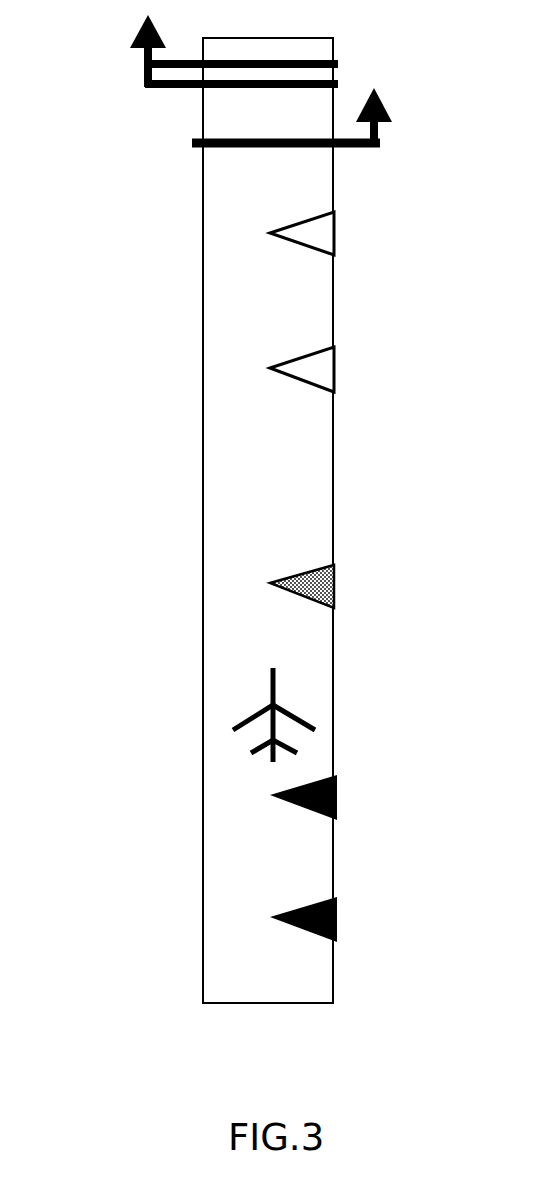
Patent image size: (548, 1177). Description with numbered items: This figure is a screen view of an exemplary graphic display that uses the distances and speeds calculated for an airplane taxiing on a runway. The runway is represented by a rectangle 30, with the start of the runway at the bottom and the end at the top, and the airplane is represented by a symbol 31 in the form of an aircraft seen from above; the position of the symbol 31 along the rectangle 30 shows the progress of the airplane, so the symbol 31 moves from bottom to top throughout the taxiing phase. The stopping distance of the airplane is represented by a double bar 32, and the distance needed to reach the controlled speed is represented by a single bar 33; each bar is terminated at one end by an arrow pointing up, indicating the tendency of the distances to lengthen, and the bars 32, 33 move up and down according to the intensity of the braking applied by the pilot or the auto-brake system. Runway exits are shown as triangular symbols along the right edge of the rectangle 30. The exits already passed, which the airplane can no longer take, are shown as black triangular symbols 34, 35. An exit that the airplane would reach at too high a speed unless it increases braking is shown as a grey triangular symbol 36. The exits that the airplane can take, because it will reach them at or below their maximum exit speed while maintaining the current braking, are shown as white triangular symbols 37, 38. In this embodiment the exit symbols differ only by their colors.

The rectangle 30 is at (213, 448).
The symbol in the form of an aircraft 31 is at (273, 690).
The double bar 32 is at (145, 70).
The single bar 33 is at (380, 132).
The black triangular symbol 34 is at (338, 911).
The black triangular symbol 35 is at (338, 792).
The grey triangular symbol 36 is at (334, 578).
The white triangular symbol 37 is at (328, 368).
The white triangular symbol 38 is at (325, 234).